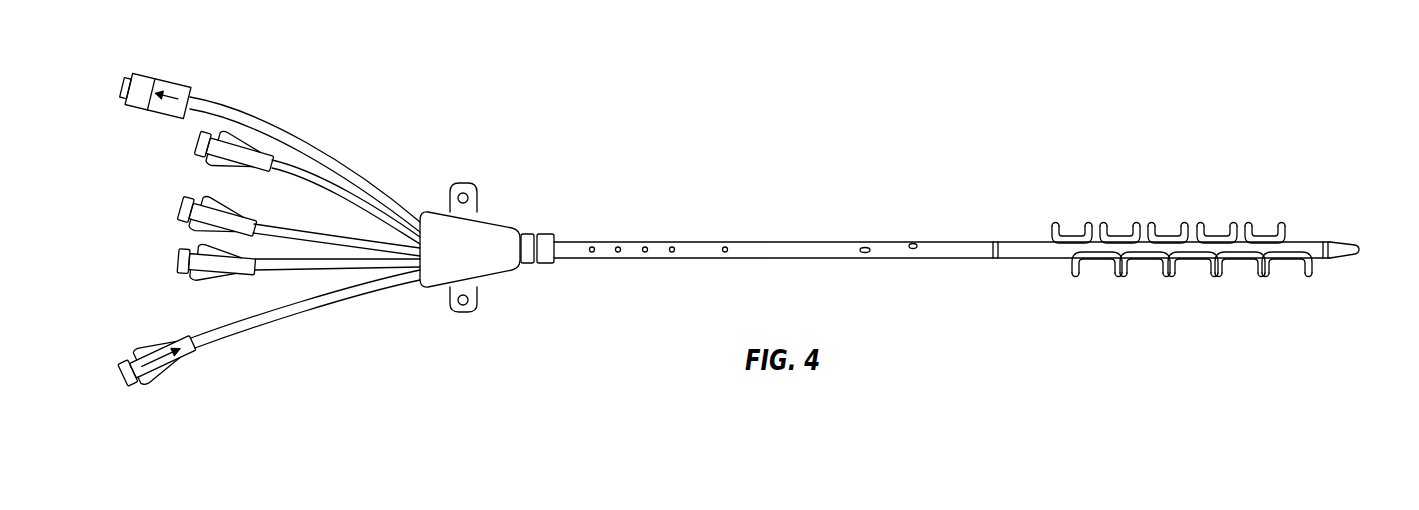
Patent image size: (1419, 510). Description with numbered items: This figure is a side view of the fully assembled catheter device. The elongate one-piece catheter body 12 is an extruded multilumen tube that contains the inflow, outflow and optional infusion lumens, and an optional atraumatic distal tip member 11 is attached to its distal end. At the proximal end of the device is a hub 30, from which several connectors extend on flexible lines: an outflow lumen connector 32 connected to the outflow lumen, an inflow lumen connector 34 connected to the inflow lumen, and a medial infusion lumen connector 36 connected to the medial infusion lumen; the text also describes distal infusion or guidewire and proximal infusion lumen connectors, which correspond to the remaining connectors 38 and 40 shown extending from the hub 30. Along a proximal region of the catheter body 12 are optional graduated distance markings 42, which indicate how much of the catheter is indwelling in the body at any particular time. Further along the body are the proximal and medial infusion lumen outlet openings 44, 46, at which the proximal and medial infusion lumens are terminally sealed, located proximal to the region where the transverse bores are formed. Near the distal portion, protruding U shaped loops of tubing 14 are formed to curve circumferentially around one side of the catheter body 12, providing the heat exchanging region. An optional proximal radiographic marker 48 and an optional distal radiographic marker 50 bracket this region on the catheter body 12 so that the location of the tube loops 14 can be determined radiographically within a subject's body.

The atraumatic distal tip member 11 is at (1345, 252).
The catheter body 12 is at (770, 240).
The tube 14 is at (1178, 225).
The hub 30 is at (492, 230).
The outflow lumen connector 32 is at (131, 83).
The inflow lumen connector 34 is at (120, 375).
The medial infusion lumen connector 36 is at (193, 148).
The luer connector 38 is at (187, 213).
The luer connector 40 is at (182, 267).
The graduated distance markings 42 is at (722, 254).
The proximal infusion lumen outlet opening 44 is at (862, 256).
The medial infusion lumen outlet opening 46 is at (916, 241).
The proximal radiographic marker 48 is at (1000, 241).
The distal radiographic marker 50 is at (1333, 240).